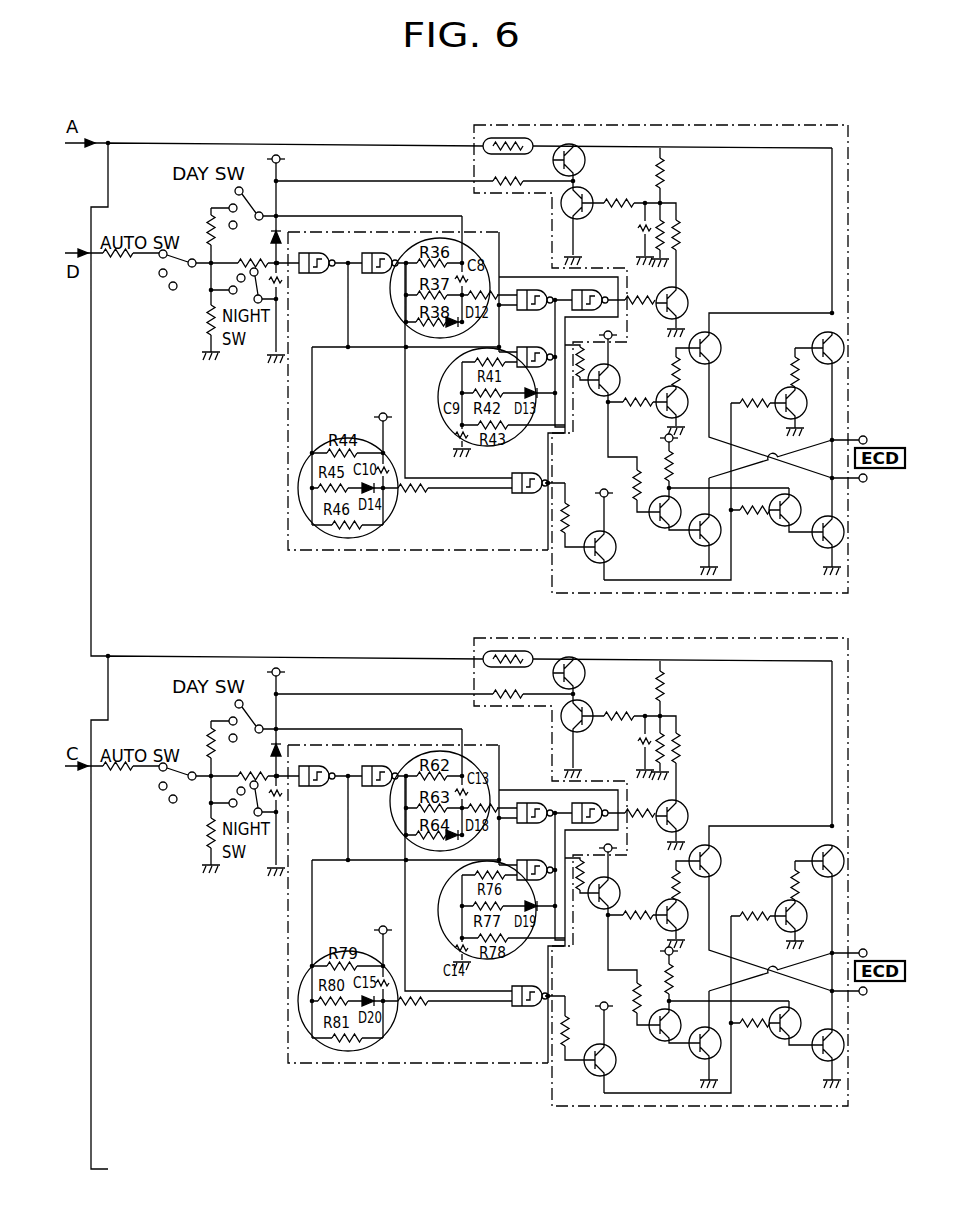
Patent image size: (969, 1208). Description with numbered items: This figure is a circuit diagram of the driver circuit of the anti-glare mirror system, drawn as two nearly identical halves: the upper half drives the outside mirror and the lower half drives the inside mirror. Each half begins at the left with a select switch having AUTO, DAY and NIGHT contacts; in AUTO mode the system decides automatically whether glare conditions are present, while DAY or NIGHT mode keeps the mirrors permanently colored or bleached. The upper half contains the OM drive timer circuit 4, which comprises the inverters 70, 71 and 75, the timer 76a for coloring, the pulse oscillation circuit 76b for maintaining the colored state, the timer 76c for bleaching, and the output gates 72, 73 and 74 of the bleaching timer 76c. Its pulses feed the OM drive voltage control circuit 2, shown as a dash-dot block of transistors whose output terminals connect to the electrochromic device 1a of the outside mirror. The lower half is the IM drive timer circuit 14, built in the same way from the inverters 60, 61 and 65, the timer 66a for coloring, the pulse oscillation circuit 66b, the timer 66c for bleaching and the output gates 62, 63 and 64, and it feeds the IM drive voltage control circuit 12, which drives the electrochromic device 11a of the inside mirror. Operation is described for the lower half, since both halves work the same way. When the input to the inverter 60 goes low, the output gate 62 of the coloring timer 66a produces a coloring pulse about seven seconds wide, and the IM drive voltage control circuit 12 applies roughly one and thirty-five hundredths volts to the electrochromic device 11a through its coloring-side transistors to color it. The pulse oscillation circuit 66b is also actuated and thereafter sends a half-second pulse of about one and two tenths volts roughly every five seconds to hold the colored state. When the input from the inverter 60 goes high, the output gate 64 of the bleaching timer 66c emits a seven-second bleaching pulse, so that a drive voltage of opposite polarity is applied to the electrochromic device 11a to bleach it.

The OM drive voltage control circuit 2 is at (757, 118).
The IM drive voltage control circuit 12 is at (850, 702).
The OM drive timer circuit 4 is at (286, 468).
The IM drive timer circuit 14 is at (286, 981).
The ECD 1a is at (878, 447).
The ECD 11a is at (881, 960).
The inverter 70 is at (322, 278).
The inverter 71 is at (374, 278).
The output gate 72 is at (522, 288).
The output gate 73 is at (532, 347).
The output gate 74 is at (512, 473).
The inverter 75 is at (598, 288).
The timer for coloring 76a is at (400, 243).
The pulse oscillation circuit 76b is at (440, 390).
The timer for bleaching 76c is at (322, 440).
The inverter 60 is at (322, 791).
The inverter 61 is at (374, 791).
The output gate 62 is at (522, 801).
The output gate 63 is at (532, 860).
The output gate 64 is at (512, 986).
The inverter 65 is at (598, 801).
The timer for coloring 66a is at (400, 756).
The pulse oscillation circuit 66b is at (440, 903).
The timer for bleaching 66c is at (322, 953).